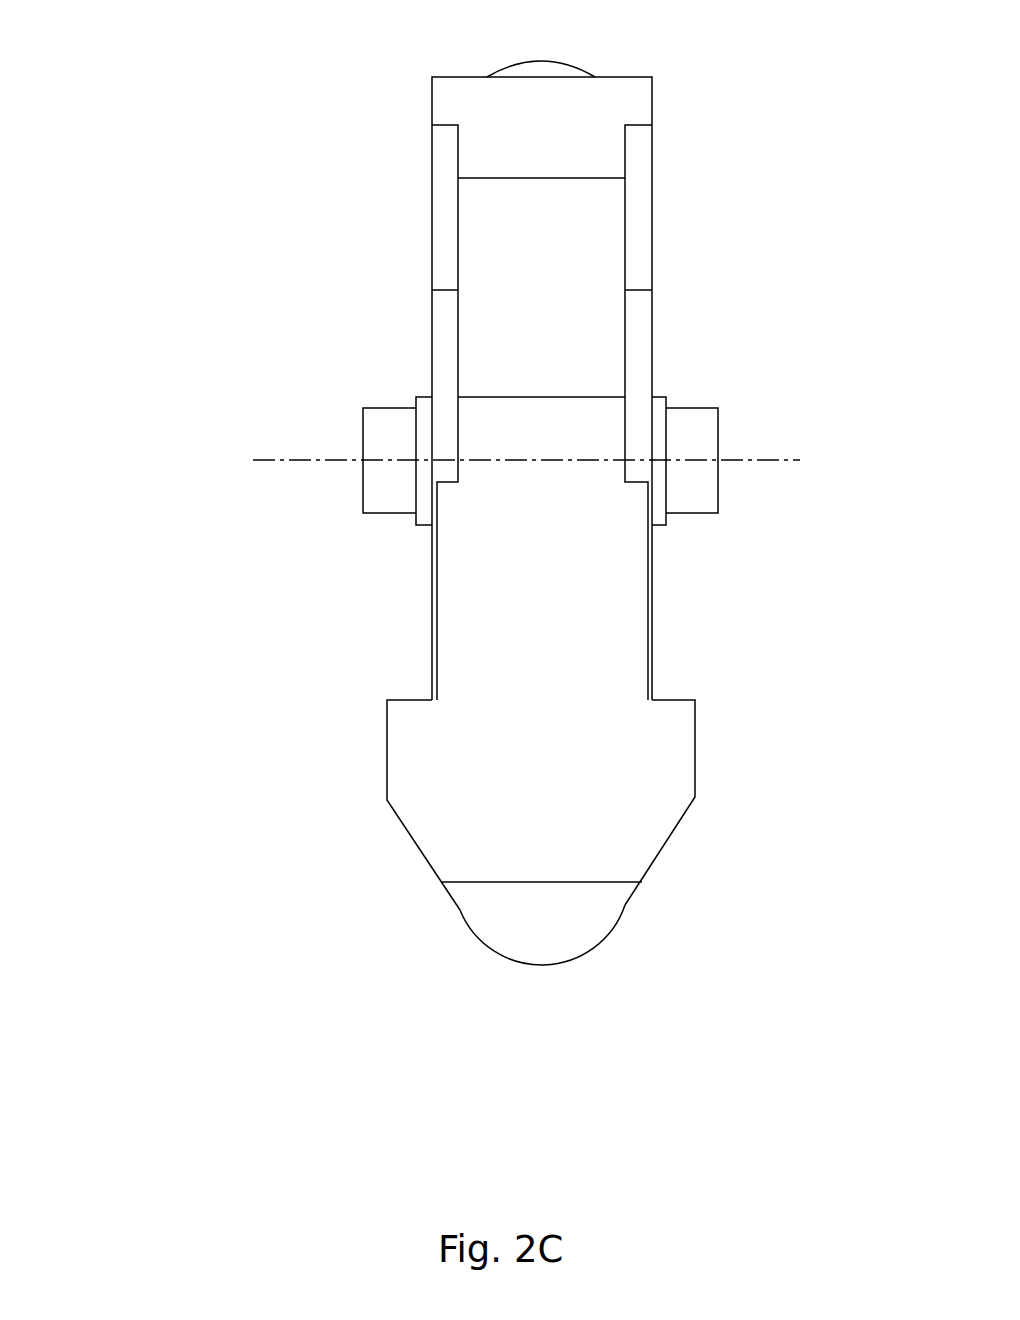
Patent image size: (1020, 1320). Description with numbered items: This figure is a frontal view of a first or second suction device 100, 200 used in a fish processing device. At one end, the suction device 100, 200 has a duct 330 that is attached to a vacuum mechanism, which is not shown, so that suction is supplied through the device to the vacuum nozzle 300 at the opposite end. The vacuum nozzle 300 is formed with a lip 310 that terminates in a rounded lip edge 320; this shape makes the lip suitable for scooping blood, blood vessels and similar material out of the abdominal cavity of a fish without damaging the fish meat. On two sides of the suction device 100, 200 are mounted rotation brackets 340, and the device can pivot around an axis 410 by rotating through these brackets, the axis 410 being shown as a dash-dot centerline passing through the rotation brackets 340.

The first suction device 100 is at (313, 598).
The second suction device 200 is at (499, 541).
The vacuum nozzle 300 is at (630, 810).
The lip 310 is at (497, 918).
The rounded lip edge 320 is at (541, 963).
The duct 330 is at (545, 68).
The rotation brackets 340 is at (700, 427).
The axis 410 is at (763, 462).